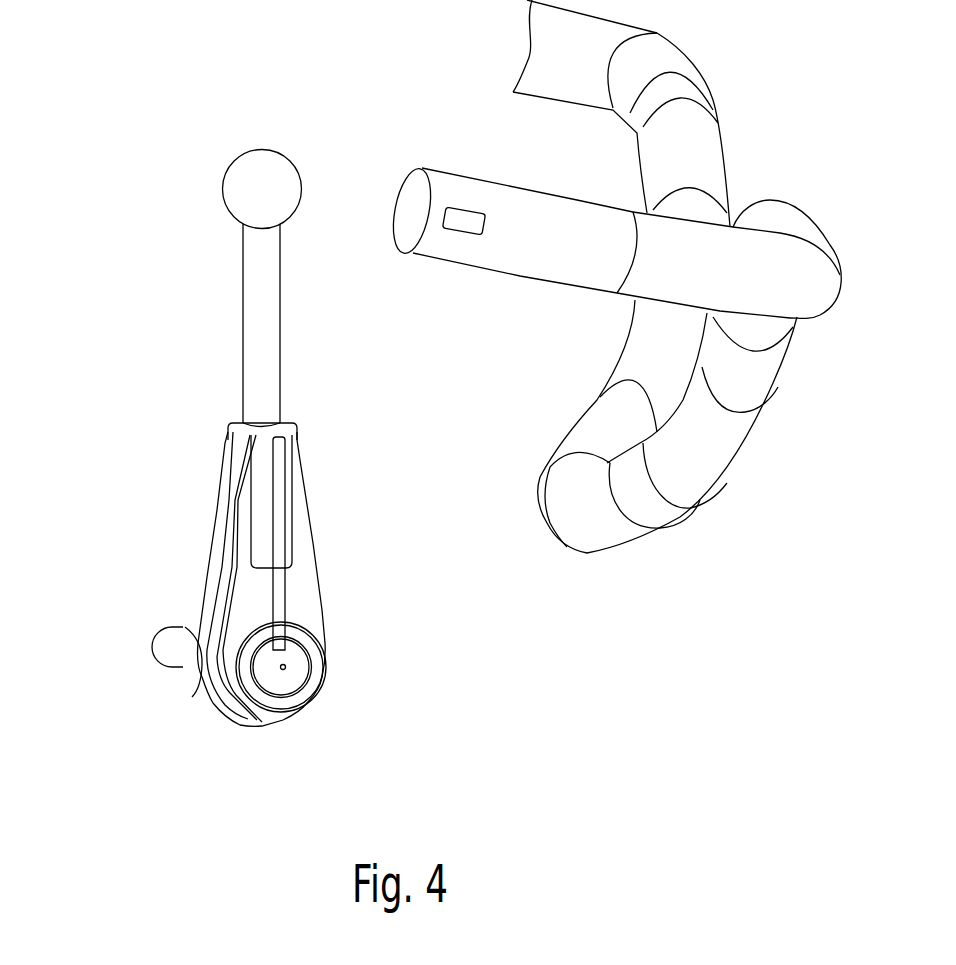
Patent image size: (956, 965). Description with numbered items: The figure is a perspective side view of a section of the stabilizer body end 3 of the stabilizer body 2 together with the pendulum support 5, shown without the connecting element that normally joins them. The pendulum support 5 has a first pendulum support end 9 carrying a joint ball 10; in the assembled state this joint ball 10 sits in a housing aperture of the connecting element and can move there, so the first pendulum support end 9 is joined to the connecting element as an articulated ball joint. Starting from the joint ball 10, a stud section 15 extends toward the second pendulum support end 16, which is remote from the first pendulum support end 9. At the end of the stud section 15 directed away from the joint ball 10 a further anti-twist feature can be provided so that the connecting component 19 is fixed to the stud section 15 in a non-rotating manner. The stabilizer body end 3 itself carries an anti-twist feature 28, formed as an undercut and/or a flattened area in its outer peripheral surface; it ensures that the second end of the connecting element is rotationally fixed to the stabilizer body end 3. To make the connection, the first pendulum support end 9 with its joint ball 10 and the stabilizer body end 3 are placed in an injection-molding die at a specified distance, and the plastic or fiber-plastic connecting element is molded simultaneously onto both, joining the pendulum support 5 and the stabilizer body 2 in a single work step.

The stabilizer body 2 is at (733, 155).
The stabilizer body end 3 is at (430, 273).
The anti-twist feature 28 is at (463, 203).
The first pendulum support end 9 is at (208, 230).
The joint ball 10 is at (262, 170).
The stud section 15 is at (258, 320).
The pendulum support 5 is at (152, 468).
The connecting component 19 is at (198, 567).
The second pendulum support end 16 is at (152, 728).